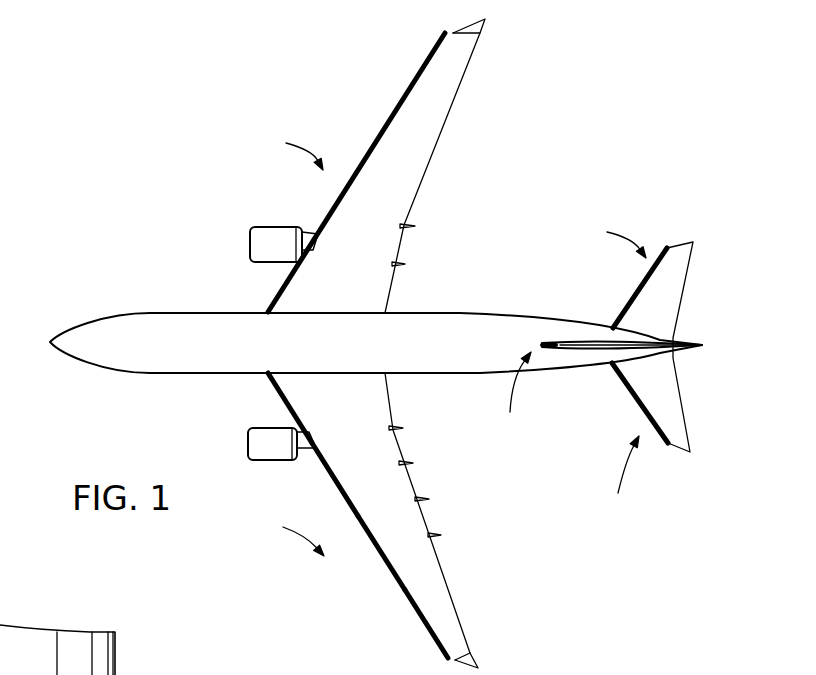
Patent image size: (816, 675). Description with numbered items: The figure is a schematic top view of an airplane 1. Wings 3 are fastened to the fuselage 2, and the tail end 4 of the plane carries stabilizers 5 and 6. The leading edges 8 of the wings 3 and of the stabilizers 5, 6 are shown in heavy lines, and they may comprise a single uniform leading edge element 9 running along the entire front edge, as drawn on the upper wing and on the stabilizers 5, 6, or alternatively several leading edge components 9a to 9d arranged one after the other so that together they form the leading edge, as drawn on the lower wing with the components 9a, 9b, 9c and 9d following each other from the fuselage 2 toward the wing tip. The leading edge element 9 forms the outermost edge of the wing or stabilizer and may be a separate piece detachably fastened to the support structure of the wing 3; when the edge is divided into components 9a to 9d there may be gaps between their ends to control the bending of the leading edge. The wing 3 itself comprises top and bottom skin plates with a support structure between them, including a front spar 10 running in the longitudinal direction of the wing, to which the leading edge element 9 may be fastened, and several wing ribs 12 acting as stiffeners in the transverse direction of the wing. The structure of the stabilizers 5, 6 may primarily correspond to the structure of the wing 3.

The airplane 1 is at (146, 200).
The fuselage 2 is at (203, 365).
The wings 3 is at (344, 262).
The tail end 4 is at (568, 267).
The stabilizer 5 is at (649, 325).
The stabilizer 6 is at (600, 350).
The leading edges 8 is at (454, 339).
The leading edge element 9 is at (383, 122).
The leading edge component 9a is at (287, 397).
The leading edge component 9b is at (328, 470).
The leading edge component 9c is at (388, 572).
The leading edge component 9d is at (425, 634).
The front spar 10 is at (306, 668).
The wing ribs 12 is at (150, 674).